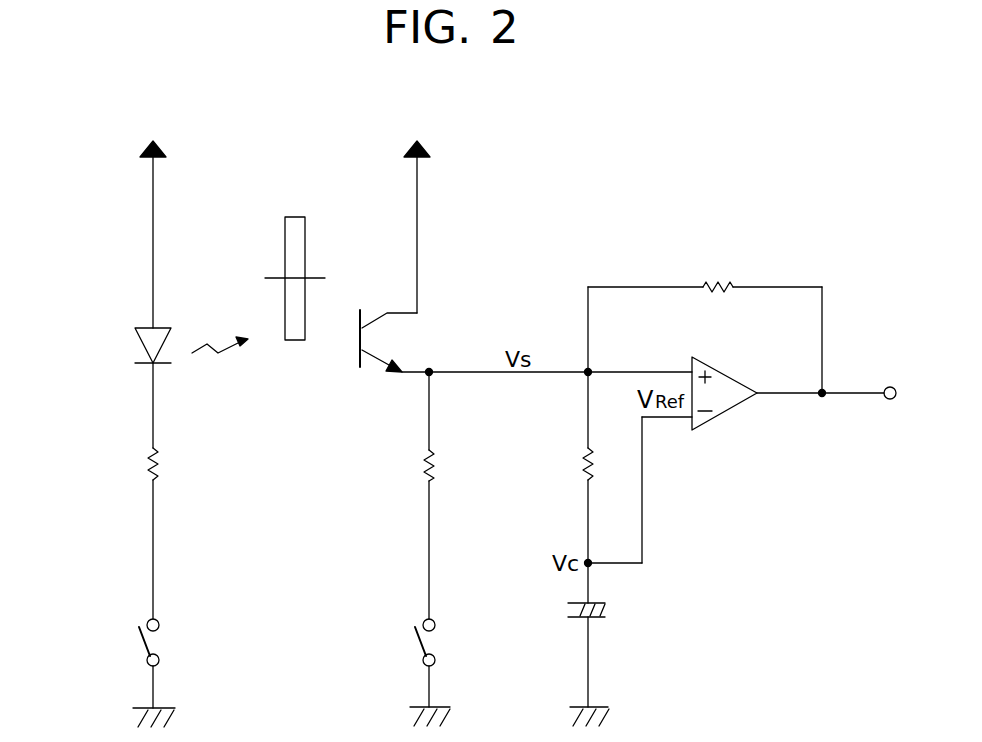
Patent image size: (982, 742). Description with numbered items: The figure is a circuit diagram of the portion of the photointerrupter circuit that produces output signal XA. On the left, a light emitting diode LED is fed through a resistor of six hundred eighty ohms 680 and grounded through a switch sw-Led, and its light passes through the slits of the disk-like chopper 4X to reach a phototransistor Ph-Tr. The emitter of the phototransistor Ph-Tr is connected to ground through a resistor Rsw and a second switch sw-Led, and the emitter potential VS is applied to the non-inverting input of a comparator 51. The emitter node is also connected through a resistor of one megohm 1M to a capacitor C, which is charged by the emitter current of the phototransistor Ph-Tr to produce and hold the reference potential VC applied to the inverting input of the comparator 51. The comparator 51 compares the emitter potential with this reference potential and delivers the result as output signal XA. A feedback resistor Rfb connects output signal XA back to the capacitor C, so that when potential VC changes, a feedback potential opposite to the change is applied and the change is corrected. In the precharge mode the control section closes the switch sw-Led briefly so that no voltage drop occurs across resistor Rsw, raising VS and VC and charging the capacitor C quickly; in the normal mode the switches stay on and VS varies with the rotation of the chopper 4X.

The chopper 4X is at (293, 217).
The comparator 51 is at (718, 418).
The light emitting diode LED is at (119, 346).
The phototransistor Ph-Tr is at (415, 341).
The resistor Rsw is at (389, 462).
The resistor Rfb is at (707, 290).
The capacitor C is at (614, 629).
The 680 ohm resistor 680 is at (114, 464).
The 1M ohm resistor 1M is at (552, 464).
The switch sw-Led is at (230, 642).
The output signal XA is at (908, 395).